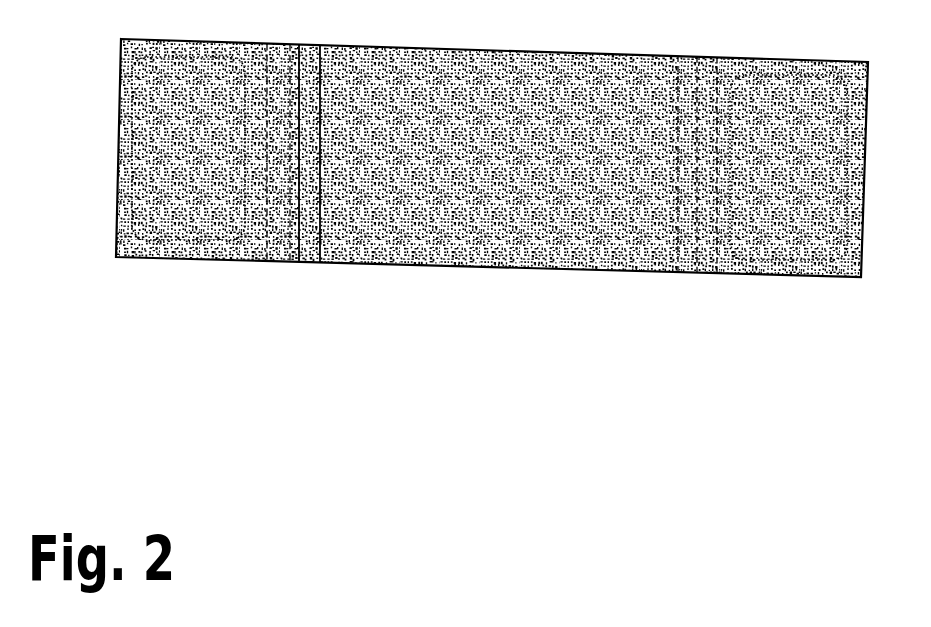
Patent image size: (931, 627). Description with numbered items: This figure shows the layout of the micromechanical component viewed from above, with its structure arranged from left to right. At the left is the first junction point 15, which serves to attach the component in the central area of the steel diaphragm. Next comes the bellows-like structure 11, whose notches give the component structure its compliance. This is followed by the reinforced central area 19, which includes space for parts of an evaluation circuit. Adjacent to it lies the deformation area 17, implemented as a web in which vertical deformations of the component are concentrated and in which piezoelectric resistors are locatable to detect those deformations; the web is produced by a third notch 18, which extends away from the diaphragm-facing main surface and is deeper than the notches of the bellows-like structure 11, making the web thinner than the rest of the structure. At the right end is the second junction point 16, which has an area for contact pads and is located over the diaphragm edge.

The bellows-like structure 11 is at (318, 264).
The first junction point 15 is at (190, 242).
The second junction point 16 is at (797, 275).
The deformation area 17 is at (697, 262).
The third notch 18 is at (703, 273).
The reinforced central area 19 is at (522, 240).